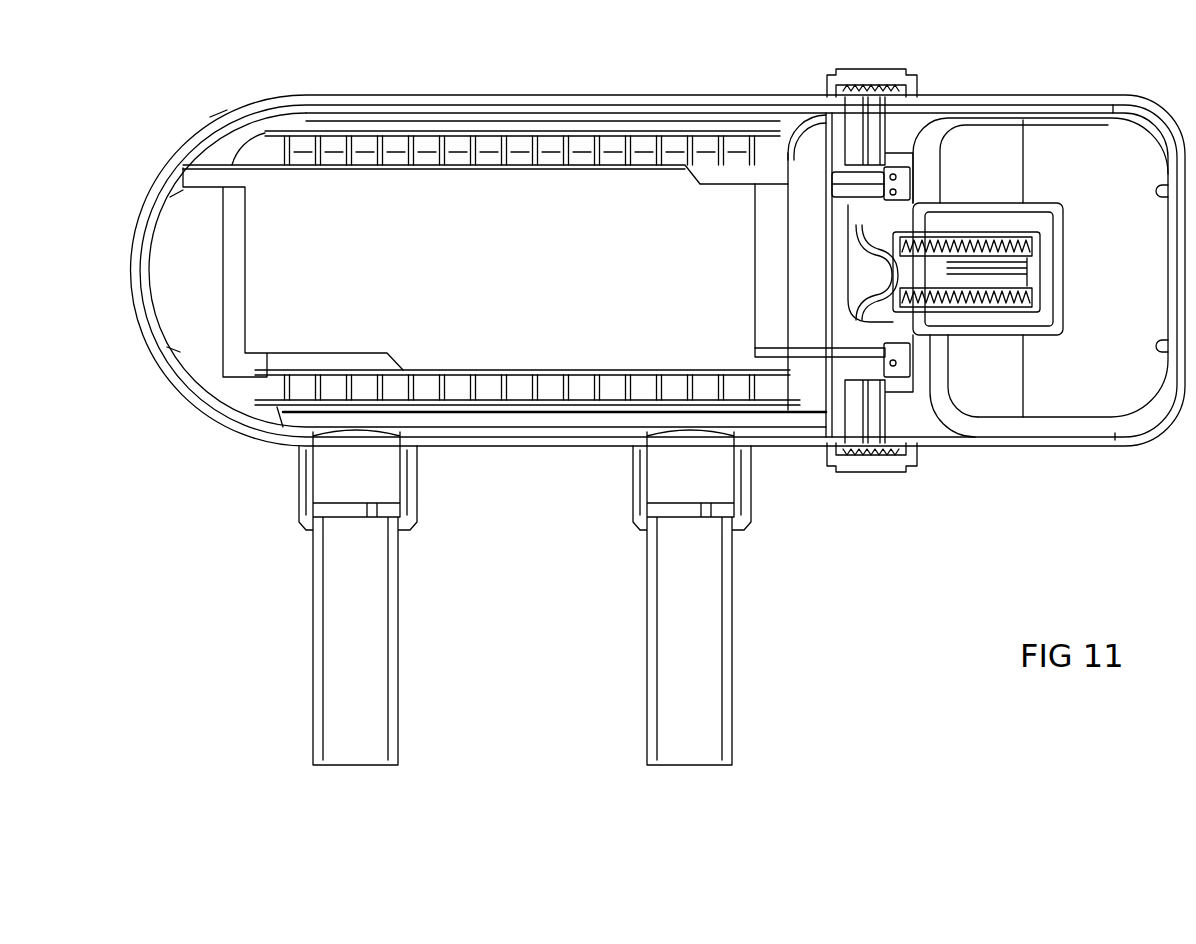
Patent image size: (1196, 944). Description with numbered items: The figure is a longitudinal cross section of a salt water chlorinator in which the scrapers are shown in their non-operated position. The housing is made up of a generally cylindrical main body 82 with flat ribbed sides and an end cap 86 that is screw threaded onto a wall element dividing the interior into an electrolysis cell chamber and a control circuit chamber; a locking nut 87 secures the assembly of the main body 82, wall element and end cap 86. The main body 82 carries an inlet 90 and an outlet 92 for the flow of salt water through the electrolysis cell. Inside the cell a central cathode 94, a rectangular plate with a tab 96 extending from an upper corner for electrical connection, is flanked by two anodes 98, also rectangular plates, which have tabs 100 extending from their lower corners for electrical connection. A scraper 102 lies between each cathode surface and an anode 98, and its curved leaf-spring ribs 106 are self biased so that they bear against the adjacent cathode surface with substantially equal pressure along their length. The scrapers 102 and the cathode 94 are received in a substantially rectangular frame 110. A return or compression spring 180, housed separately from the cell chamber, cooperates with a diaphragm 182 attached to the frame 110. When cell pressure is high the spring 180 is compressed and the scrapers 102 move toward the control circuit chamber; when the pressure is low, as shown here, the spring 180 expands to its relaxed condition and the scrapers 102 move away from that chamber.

The main body 82 is at (427, 94).
The end cap 86 is at (1102, 94).
The locking nut 87 is at (870, 70).
The inlet 90 is at (345, 694).
The outlet 92 is at (703, 667).
The central cathode 94 is at (758, 137).
The tab 96 is at (850, 183).
The anodes 98 is at (345, 218).
The tabs 100 is at (810, 365).
The scraper 102 is at (574, 126).
The ribs 106 is at (643, 163).
The frame 110 is at (816, 141).
The return spring 180 is at (975, 245).
The diaphragm 182 is at (878, 304).